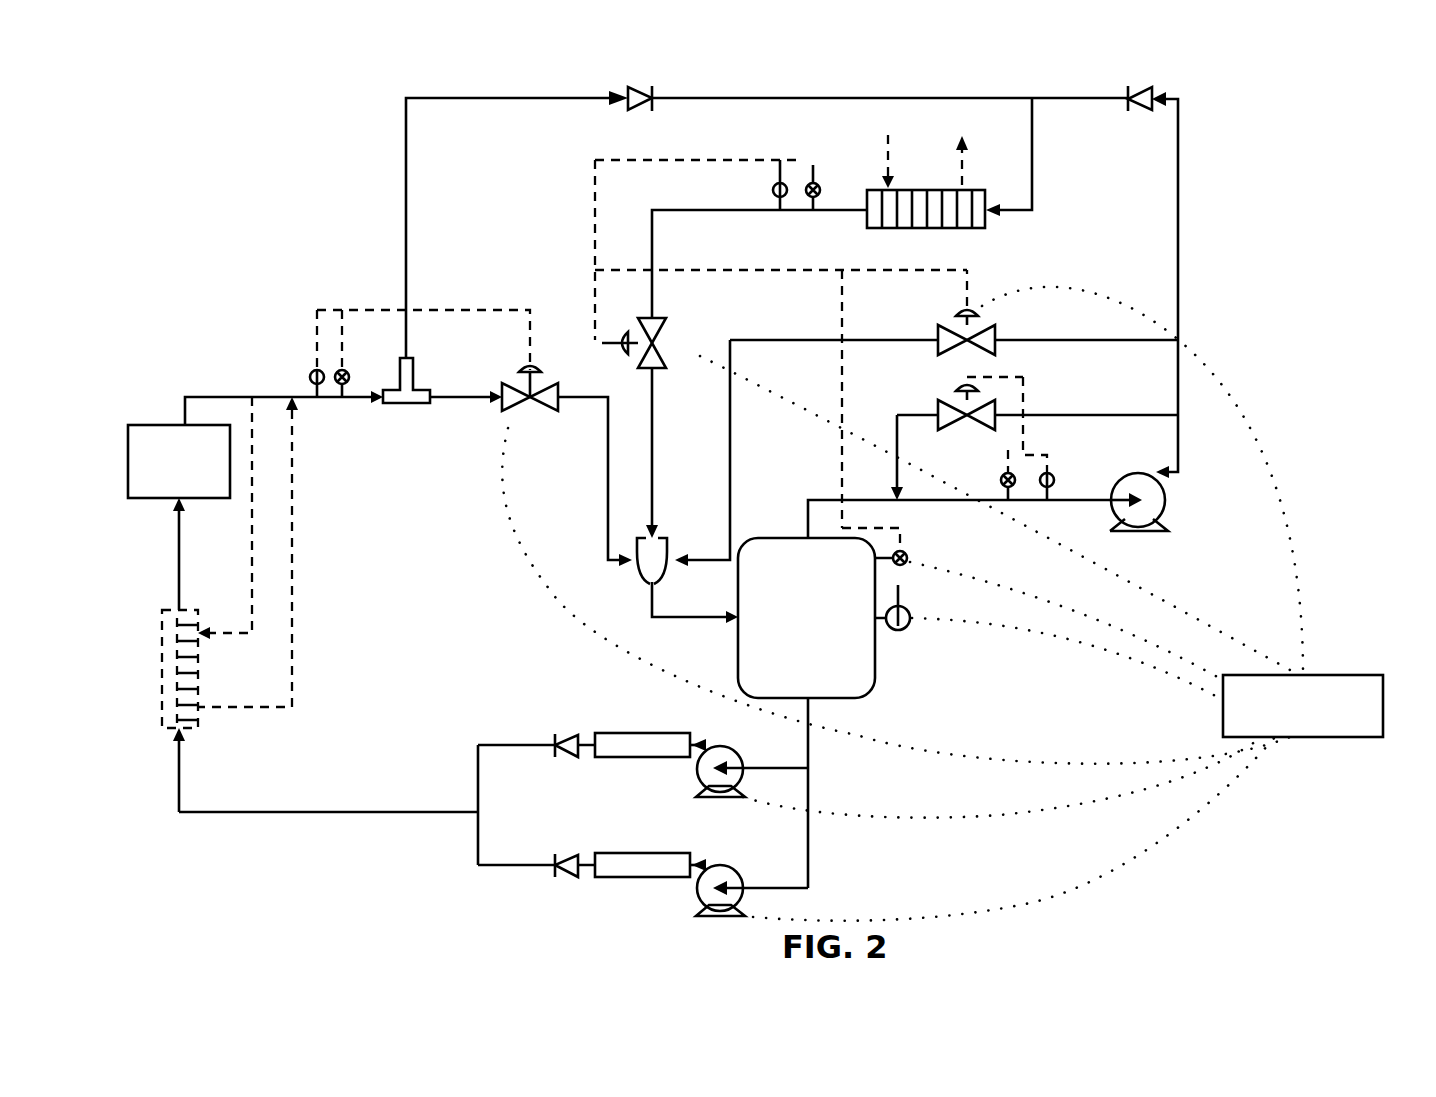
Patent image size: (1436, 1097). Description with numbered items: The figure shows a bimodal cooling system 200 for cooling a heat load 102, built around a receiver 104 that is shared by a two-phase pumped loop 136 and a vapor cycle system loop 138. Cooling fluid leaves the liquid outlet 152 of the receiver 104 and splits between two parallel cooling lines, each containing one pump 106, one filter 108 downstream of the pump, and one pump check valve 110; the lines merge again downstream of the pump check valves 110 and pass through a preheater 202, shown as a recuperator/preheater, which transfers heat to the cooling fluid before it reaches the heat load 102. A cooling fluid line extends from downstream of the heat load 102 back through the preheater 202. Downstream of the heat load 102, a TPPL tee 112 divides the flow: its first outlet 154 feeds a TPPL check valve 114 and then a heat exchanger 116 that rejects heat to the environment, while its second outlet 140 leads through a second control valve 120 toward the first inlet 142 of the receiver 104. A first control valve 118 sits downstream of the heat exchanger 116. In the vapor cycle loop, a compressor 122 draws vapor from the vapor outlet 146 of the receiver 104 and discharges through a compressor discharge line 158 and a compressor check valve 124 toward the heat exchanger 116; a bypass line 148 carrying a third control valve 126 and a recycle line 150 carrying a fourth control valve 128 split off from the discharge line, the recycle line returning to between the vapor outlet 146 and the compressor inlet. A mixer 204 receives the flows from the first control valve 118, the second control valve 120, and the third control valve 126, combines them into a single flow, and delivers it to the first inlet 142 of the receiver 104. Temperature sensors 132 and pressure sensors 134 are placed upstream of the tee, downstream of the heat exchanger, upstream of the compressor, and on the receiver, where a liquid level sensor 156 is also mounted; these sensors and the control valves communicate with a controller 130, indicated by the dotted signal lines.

The bimodal cooling system 200 is at (250, 186).
The heat load 102 is at (152, 424).
The receiver 104 is at (876, 685).
The pump 106 is at (700, 760).
The filter 108 is at (640, 733).
The pump check valve 110 is at (565, 735).
The TPPL tee 112 is at (395, 405).
The TPPL check valve 114 is at (630, 105).
The heat exchanger 116 is at (992, 215).
The first control valve 118 is at (655, 370).
The second control valve 120 is at (548, 410).
The compressor 122 is at (1167, 508).
The compressor check valve 124 is at (1135, 108).
The third control valve 126 is at (940, 333).
The fourth control valve 128 is at (940, 408).
The controller 130 is at (1365, 675).
The temperature sensor 132 is at (311, 374).
The pressure sensor 134 is at (346, 370).
The two-phase pumped loop 136 is at (407, 145).
The vapor cycle system loop 138 is at (1178, 222).
The second outlet of the TPPL tee 140 is at (440, 400).
The first inlet of the receiver 142 is at (736, 620).
The vapor outlet of the receiver 146 is at (806, 536).
The bypass line 148 is at (1030, 340).
The recycle line 150 is at (1085, 415).
The liquid outlet of the receiver 152 is at (810, 702).
The first outlet of the TPPL tee 154 is at (410, 358).
The liquid level sensor 156 is at (905, 628).
The compressor discharge line 158 is at (1178, 460).
The preheater 202 is at (200, 728).
The mixer 204 is at (658, 525).